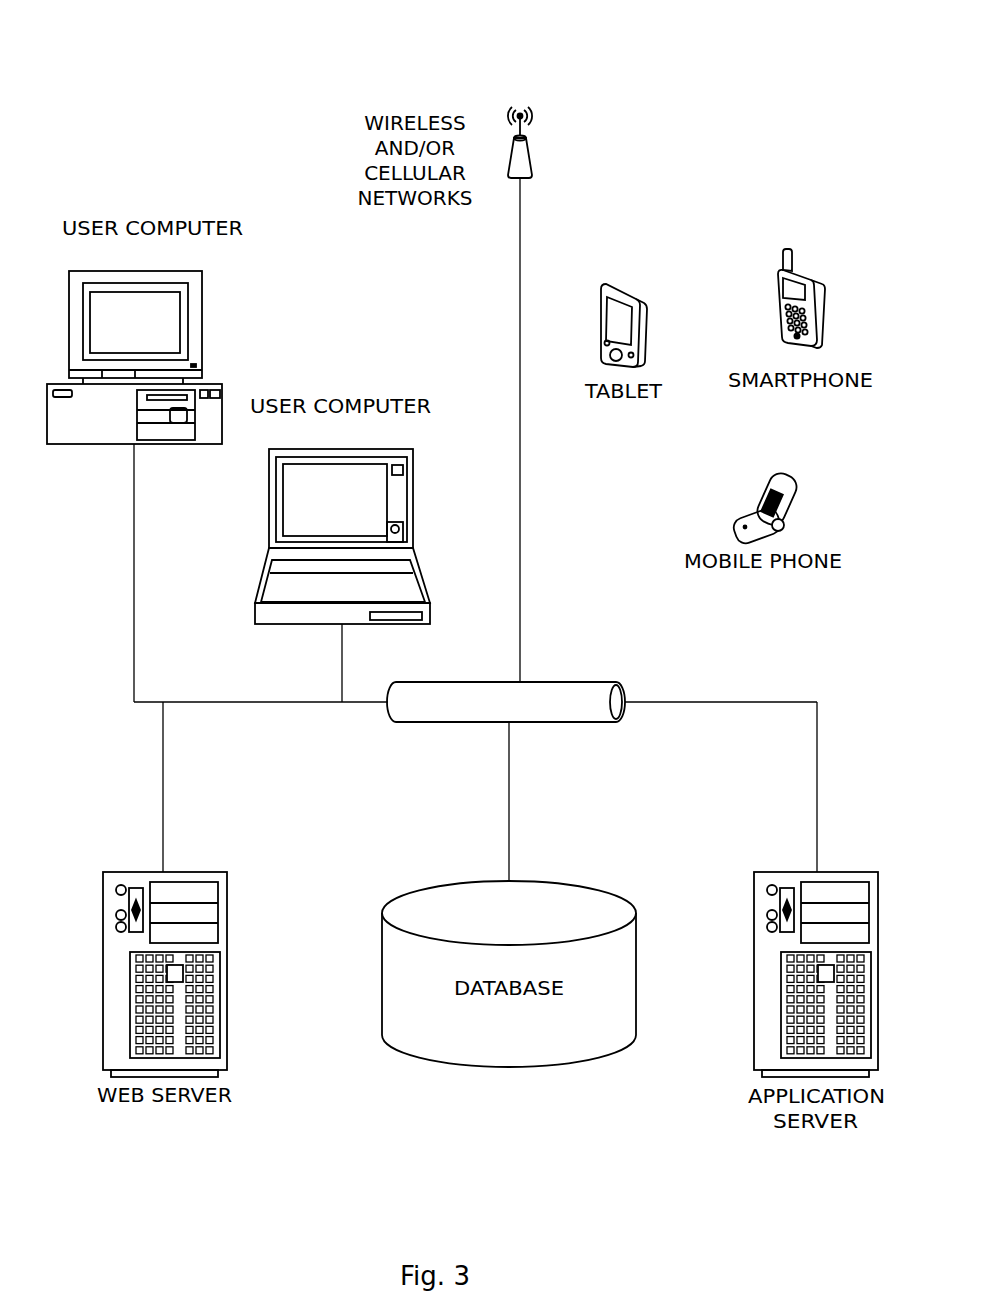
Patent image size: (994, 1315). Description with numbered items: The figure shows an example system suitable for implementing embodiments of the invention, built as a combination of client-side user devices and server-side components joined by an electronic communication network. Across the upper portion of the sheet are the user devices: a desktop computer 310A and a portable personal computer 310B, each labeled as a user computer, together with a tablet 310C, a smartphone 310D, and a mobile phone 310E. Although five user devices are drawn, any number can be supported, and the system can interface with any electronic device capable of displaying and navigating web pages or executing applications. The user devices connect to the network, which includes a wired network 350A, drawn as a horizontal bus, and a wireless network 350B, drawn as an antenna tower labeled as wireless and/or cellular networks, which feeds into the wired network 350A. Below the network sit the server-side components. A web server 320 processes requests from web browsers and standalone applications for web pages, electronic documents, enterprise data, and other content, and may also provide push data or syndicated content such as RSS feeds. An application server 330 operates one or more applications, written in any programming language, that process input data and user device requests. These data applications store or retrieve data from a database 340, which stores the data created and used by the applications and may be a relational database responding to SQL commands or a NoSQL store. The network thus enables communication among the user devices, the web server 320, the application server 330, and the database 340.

The desktop computer 310A is at (205, 273).
The portable personal computer 310B is at (408, 443).
The tablet 310C is at (630, 277).
The smartphone 310D is at (802, 262).
The mobile phone 310E is at (793, 469).
The web server 320 is at (205, 853).
The application server 330 is at (830, 860).
The database 340 is at (562, 882).
The wired network 350A is at (547, 677).
The wireless network 350B is at (550, 152).